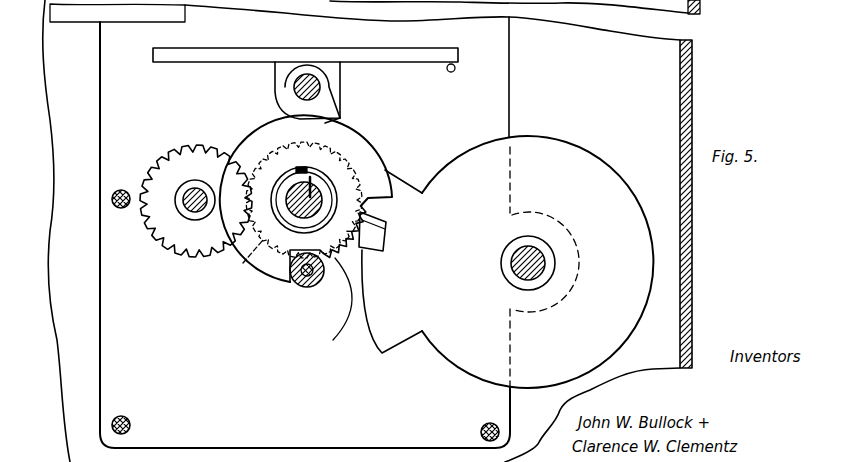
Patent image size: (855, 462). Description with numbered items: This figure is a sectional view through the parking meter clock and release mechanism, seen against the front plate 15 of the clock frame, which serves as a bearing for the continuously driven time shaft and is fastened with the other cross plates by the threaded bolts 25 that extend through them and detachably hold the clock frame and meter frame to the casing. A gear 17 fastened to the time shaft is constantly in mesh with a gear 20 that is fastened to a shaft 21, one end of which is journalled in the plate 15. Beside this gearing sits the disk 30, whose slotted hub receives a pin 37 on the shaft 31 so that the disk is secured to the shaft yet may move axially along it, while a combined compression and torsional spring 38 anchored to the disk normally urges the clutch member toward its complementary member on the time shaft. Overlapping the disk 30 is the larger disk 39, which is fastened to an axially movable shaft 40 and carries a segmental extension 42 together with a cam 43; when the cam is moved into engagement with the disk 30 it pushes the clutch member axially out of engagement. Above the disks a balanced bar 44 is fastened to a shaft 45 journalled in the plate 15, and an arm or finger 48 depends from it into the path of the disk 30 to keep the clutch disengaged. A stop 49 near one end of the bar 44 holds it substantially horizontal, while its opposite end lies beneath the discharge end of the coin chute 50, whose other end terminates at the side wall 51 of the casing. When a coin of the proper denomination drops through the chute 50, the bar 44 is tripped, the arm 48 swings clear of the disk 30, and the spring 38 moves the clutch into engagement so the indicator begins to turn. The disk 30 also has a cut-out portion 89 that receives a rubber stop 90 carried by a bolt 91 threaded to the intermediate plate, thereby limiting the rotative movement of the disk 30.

The front plate 15 is at (509, 44).
The gear 17 is at (242, 265).
The gear 20 is at (186, 137).
The shaft 21 is at (193, 213).
The threaded bolts 25 is at (111, 202).
The disk 30 is at (278, 125).
The shaft 31 is at (318, 182).
The pin 37 is at (290, 178).
The combined compression and torsional spring 38 is at (330, 180).
The disk 39 is at (575, 147).
The axially movable shaft 40 is at (546, 256).
The segmental extension 42 is at (400, 181).
The cam 43 is at (388, 233).
The balanced bar 44 is at (384, 44).
The shaft 45 is at (292, 86).
The arm or finger 48 is at (335, 108).
The stop 49 is at (458, 68).
The coin chute 50 is at (120, 22).
The side wall 51 is at (692, 82).
The cut-out portion 89 is at (330, 311).
The rubber stop 90 is at (303, 286).
The bolt 91 is at (318, 280).